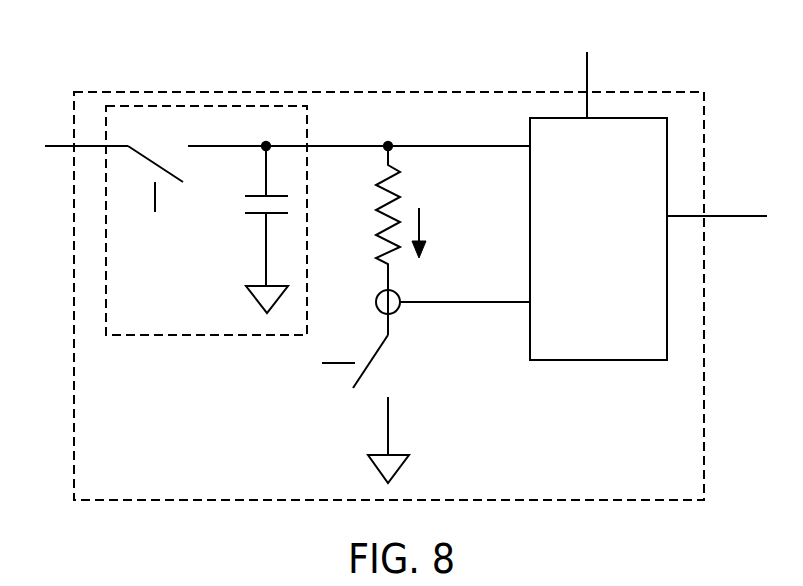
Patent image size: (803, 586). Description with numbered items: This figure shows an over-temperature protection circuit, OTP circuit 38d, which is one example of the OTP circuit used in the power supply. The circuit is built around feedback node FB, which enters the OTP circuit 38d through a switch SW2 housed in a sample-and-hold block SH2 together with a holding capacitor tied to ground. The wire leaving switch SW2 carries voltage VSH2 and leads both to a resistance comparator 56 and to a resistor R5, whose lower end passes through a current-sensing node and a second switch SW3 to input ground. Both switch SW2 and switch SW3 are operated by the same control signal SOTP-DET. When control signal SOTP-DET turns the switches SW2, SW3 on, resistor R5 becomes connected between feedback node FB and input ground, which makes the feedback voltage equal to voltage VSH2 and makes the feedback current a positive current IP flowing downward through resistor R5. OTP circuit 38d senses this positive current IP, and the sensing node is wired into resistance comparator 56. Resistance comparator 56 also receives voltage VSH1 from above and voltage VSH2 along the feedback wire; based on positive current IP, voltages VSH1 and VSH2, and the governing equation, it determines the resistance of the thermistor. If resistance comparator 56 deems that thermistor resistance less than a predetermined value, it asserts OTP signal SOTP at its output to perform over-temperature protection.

The OTP circuit 38d is at (165, 92).
The sample-and-hold block SH2 is at (281, 106).
The switch SW2 is at (197, 165).
The switch SW3 is at (380, 398).
The resistor R5 is at (372, 218).
The resistance comparator 56 is at (605, 234).
The feedback node FB is at (69, 145).
The voltage VSH1 is at (611, 76).
The voltage VSH2 is at (365, 130).
The positive current IP is at (427, 233).
The OTP signal SOTP is at (726, 197).
The control signal SOTP-DET is at (229, 302).